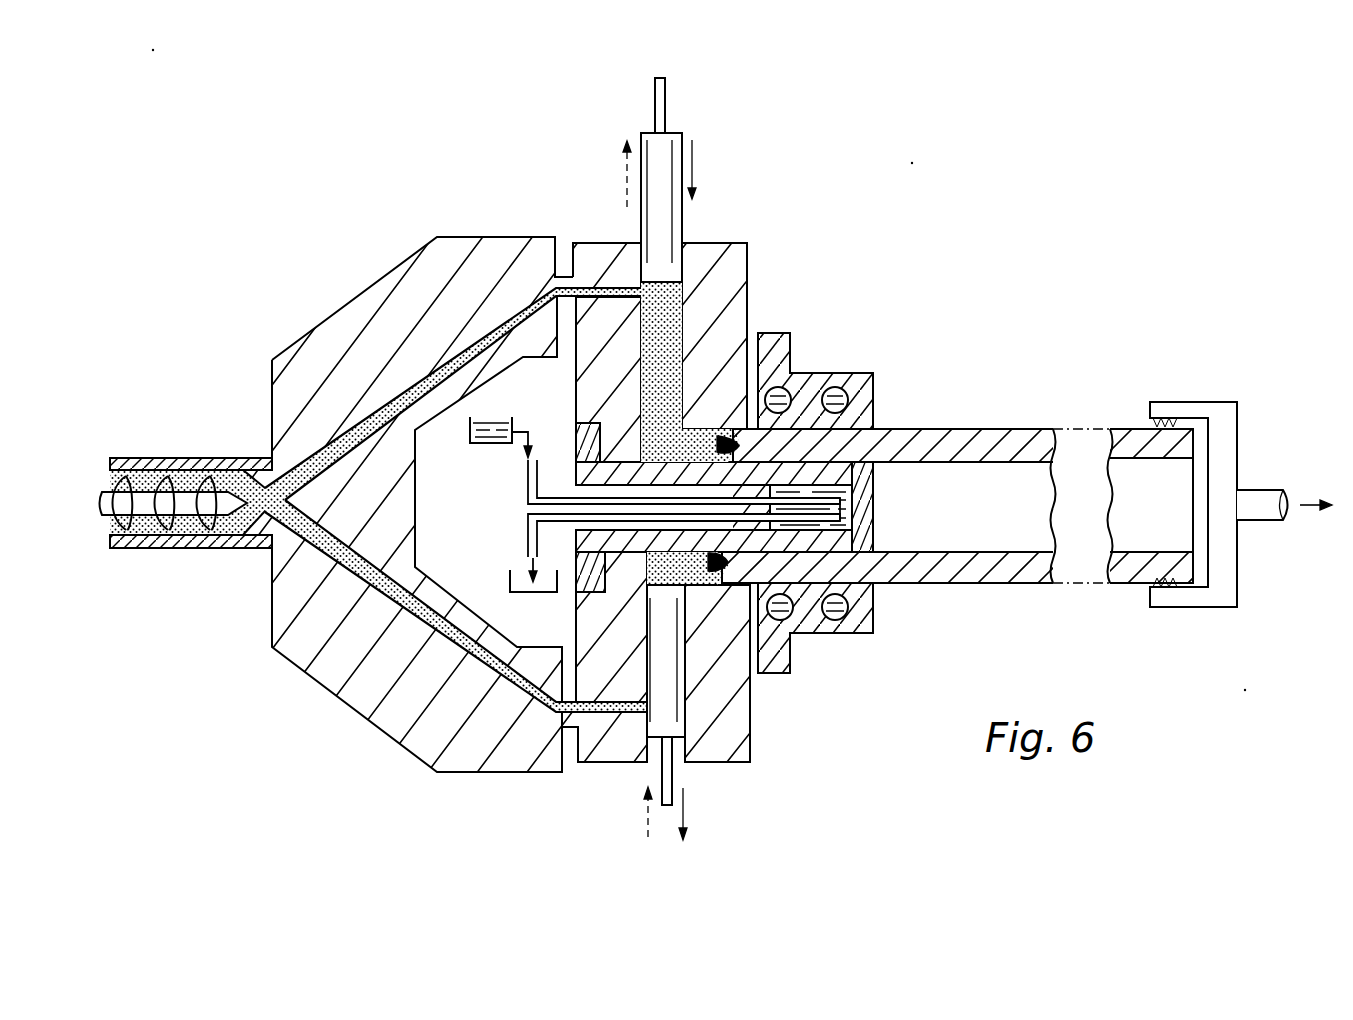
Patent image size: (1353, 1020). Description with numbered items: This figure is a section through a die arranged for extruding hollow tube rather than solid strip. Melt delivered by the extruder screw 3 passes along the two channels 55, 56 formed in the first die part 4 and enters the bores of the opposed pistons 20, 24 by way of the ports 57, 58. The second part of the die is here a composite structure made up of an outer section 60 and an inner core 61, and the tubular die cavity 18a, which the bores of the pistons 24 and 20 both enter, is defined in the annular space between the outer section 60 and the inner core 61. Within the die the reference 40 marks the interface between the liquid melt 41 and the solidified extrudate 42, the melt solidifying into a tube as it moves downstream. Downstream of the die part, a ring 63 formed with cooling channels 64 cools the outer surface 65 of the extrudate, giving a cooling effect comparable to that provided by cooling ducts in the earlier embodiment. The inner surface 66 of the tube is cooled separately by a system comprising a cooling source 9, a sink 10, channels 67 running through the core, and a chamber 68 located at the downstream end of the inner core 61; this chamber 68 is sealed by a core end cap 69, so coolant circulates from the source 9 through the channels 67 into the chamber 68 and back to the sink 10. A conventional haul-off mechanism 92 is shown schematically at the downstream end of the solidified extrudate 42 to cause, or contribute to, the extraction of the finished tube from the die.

The screw 3 is at (189, 478).
The die block 4 is at (308, 330).
The cooling source 9 is at (470, 438).
The sink 10 is at (510, 578).
The tubular die cavity 18a is at (701, 410).
The piston 20 is at (677, 712).
The piston 24 is at (665, 143).
The interface 40 is at (738, 590).
The liquid melt 41 is at (655, 570).
The solidified extrudate 42 is at (877, 440).
The channel 55 is at (505, 693).
The channel 56 is at (415, 387).
The port 57 is at (632, 727).
The port 58 is at (630, 288).
The outer section 60 is at (728, 270).
The inner core 61 is at (577, 443).
The ring 63 is at (853, 633).
The cooling channels 64 is at (822, 633).
The outer surface 65 is at (900, 583).
The inner surface 66 is at (900, 552).
The channels 67 is at (528, 482).
The chamber 68 is at (873, 483).
The core end cap 69 is at (873, 507).
The haul-off mechanism 92 is at (1198, 402).